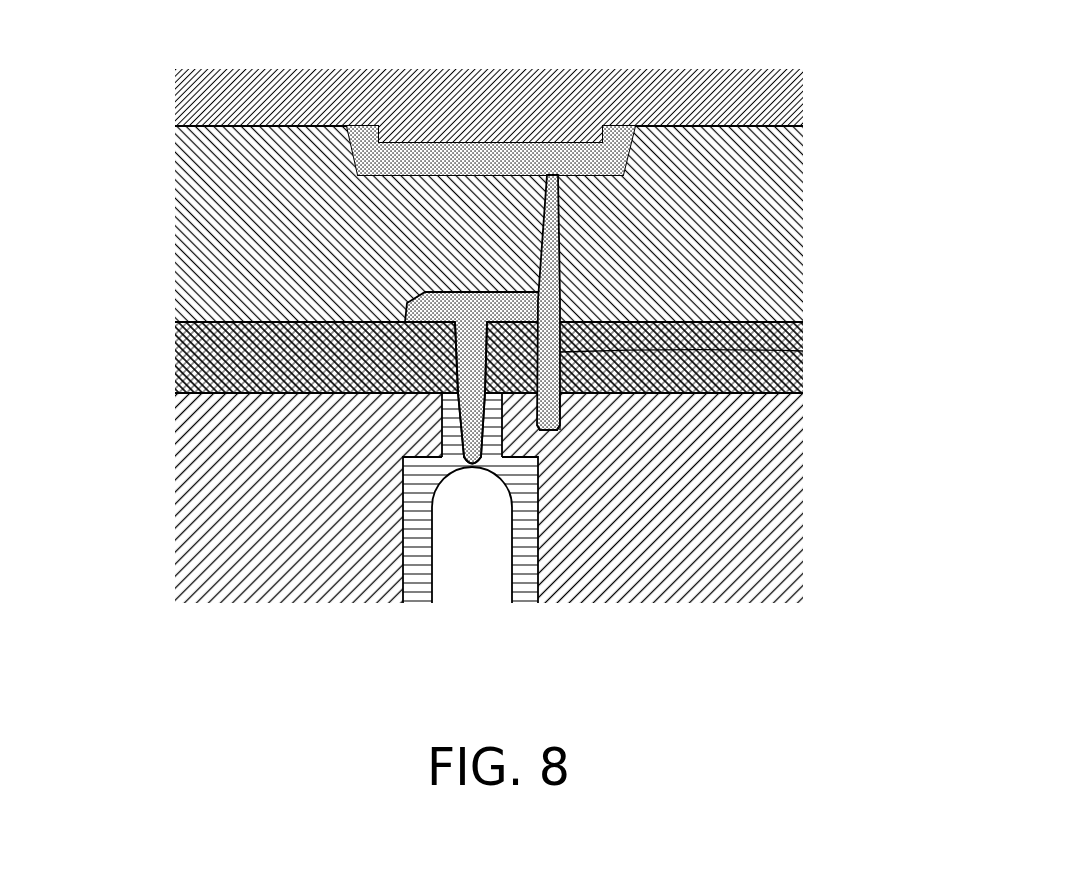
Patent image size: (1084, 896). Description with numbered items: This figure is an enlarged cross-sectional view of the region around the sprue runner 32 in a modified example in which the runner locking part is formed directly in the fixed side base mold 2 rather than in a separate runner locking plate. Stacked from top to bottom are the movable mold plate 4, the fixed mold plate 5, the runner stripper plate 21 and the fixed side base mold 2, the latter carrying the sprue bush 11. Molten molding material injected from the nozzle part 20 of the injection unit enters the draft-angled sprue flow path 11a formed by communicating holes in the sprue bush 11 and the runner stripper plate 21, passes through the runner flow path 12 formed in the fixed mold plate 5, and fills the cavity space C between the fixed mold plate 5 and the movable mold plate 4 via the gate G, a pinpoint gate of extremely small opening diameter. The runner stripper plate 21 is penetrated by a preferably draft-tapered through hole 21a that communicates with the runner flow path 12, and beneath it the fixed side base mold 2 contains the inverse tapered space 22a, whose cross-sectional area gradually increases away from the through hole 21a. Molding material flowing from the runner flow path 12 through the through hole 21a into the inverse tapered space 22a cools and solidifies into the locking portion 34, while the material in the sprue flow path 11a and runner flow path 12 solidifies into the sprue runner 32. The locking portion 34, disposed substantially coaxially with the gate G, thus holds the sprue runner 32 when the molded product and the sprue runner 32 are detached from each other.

The fixed side base mold 2 is at (187, 490).
The movable mold plate 4 is at (205, 100).
The fixed mold plate 5 is at (200, 218).
The sprue bush 11 is at (520, 587).
The sprue flow path 11a is at (442, 414).
The runner flow path 12 is at (560, 295).
The nozzle part 20 is at (475, 583).
The runner stripper plate 21 is at (175, 350).
The through hole 21a is at (803, 351).
The inverse tapered space 22a is at (567, 415).
The sprue runner 32 is at (478, 300).
The locking portion 34 is at (542, 435).
The cavity space C is at (412, 135).
The gate G is at (541, 290).